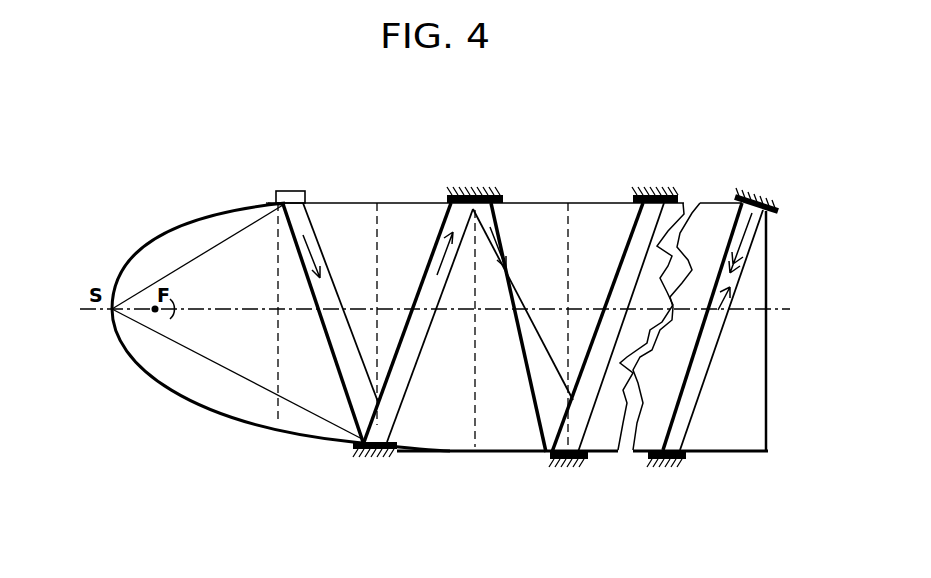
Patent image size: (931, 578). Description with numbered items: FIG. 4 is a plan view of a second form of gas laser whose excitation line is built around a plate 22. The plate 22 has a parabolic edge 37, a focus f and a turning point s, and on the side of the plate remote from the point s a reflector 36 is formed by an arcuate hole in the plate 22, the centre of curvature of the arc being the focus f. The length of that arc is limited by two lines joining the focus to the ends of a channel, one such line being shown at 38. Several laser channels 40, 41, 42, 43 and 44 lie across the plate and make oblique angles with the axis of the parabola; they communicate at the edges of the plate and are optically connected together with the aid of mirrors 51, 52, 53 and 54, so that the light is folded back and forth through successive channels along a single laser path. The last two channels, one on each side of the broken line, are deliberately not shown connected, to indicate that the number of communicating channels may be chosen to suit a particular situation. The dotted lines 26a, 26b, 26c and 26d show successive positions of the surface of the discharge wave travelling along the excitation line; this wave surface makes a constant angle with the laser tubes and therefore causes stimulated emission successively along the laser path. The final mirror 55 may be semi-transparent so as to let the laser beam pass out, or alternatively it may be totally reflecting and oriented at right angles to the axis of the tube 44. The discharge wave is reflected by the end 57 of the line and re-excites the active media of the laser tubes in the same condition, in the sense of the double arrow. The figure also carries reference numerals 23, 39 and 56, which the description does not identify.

The plate 22 is at (200, 367).
The elliptical reflector 23 is at (142, 308).
The dotted line 26a is at (278, 420).
The dotted line 26b is at (372, 203).
The dotted line 26c is at (485, 440).
The dotted line 26d is at (578, 207).
The reflector 36 is at (183, 298).
The parabolic edge 37 is at (147, 372).
The line 38 is at (247, 207).
The aperture stop 39 is at (293, 191).
The channel 40 is at (352, 363).
The channel 41 is at (447, 203).
The channel 42 is at (508, 207).
The channel 43 is at (585, 408).
The channel 44 is at (740, 207).
The mirror 51 is at (405, 453).
The mirror 52 is at (500, 195).
The mirror 53 is at (593, 460).
The mirror 54 is at (680, 192).
The final mirror 55 is at (737, 194).
The light beam direction 56 is at (303, 258).
The end of the line 57 is at (787, 425).